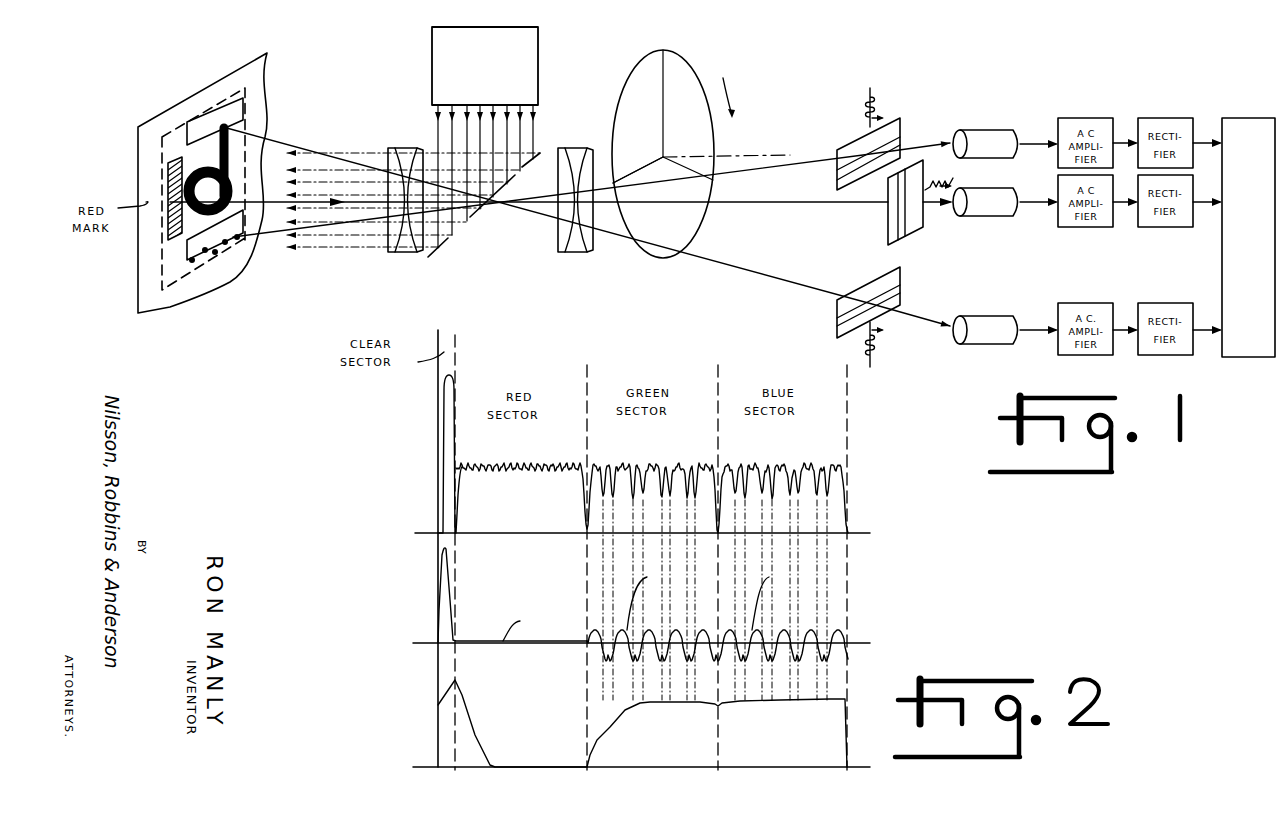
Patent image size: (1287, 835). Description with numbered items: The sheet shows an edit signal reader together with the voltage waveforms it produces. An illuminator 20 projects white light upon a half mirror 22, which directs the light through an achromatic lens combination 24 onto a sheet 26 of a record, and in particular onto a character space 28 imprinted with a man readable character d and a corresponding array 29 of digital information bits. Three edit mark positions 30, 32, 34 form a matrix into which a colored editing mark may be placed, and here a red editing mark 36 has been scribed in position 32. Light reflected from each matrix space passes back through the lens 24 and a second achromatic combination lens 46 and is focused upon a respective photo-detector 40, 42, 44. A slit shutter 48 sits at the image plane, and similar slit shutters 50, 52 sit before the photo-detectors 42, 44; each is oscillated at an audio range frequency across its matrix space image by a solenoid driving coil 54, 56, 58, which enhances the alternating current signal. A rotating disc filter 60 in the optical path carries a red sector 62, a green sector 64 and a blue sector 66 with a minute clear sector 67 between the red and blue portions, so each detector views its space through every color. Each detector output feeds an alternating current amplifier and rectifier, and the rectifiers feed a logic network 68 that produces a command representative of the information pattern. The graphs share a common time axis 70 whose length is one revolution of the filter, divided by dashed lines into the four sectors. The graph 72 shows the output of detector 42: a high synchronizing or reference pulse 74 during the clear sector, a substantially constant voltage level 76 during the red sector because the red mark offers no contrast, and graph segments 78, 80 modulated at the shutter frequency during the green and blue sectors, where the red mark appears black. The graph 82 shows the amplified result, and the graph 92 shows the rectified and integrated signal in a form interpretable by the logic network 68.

In FIG. 1, the illuminator 20 is at (538, 50).
In FIG. 1, the half mirror 22 is at (460, 227).
In FIG. 1, the achromatic lens combination 24 is at (394, 262).
In FIG. 1, the sheet 26 is at (137, 237).
In FIG. 1, the character space 28 is at (232, 95).
In FIG. 1, the array of digital information bits 29 is at (183, 270).
In FIG. 1, the edit mark position 30 is at (191, 122).
In FIG. 1, the edit mark position 32 is at (168, 172).
In FIG. 1, the edit mark position 34 is at (187, 250).
In FIG. 1, the red editing mark 36 is at (174, 195).
In FIG. 1, the photo-detector 40 is at (976, 316).
In FIG. 1, the photo-detector 42 is at (993, 218).
In FIG. 1, the photo-detector 44 is at (982, 130).
In FIG. 1, the second achromatic combination lens 46 is at (566, 262).
In FIG. 1, the slit shutter 48 is at (837, 322).
In FIG. 1, the slit shutter 50 is at (923, 225).
In FIG. 1, the slit shutter 52 is at (902, 123).
In FIG. 1, the solenoid driving coil 54 is at (878, 356).
In FIG. 1, the solenoid driving coil 56 is at (953, 172).
In FIG. 1, the solenoid driving coil 58 is at (878, 100).
In FIG. 1, the rotating disc filter 60 is at (657, 259).
In FIG. 1, the red sector 62 is at (669, 238).
In FIG. 1, the green sector 64 is at (686, 128).
In FIG. 1, the blue sector 66 is at (633, 128).
In FIG. 1, the clear sector 67 is at (614, 183).
In FIG. 1, the logic network 68 is at (1222, 283).
In FIG. 2, the time axis 70 is at (420, 535).
In FIG. 2, the graph 72 is at (425, 503).
In FIG. 2, the synchronizing or reference pulse 74 is at (458, 449).
In FIG. 2, the constant voltage level 76 is at (524, 467).
In FIG. 2, the graph segment 78 is at (655, 450).
In FIG. 2, the graph segment 80 is at (749, 466).
In FIG. 2, the graph 82 is at (428, 616).
In FIG. 2, the graph 92 is at (428, 717).